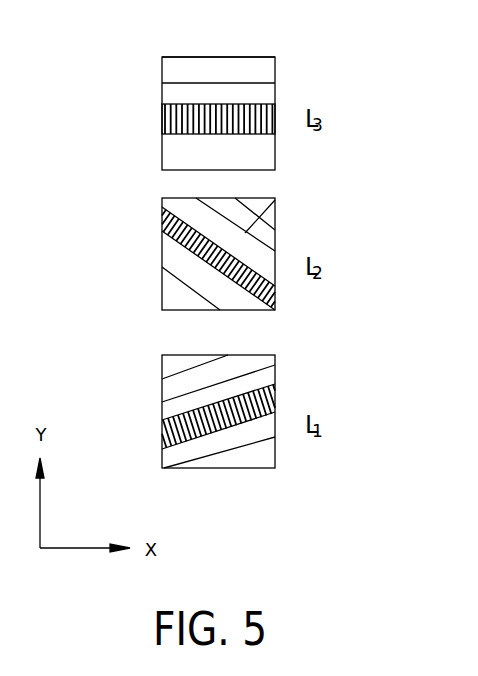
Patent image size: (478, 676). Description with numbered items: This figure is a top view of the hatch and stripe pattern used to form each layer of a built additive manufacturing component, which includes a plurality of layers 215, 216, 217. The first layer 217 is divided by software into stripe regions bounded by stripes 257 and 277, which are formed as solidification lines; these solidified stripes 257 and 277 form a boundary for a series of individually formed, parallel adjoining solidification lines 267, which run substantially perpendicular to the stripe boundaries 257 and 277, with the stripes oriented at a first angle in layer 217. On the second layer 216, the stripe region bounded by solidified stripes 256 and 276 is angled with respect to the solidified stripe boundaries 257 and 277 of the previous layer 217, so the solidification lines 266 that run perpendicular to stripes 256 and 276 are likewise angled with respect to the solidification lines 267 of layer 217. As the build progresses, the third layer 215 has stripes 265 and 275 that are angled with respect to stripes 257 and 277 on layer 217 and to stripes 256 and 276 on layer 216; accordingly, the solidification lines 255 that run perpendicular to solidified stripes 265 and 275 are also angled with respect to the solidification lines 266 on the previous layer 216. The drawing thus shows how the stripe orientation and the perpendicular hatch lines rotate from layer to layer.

The third layer 215 is at (290, 85).
The second layer 216 is at (290, 228).
The first layer 217 is at (290, 382).
The stripe 275 is at (276, 57).
The solidified stripe 276 is at (277, 200).
The solidified stripe 277 is at (175, 413).
The stripe 265 is at (173, 83).
The solidification lines 266 is at (163, 231).
The solidification lines 267 is at (163, 441).
The solidification lines 255 is at (167, 120).
The solidified stripe 256 is at (270, 298).
The solidified stripe 257 is at (188, 438).